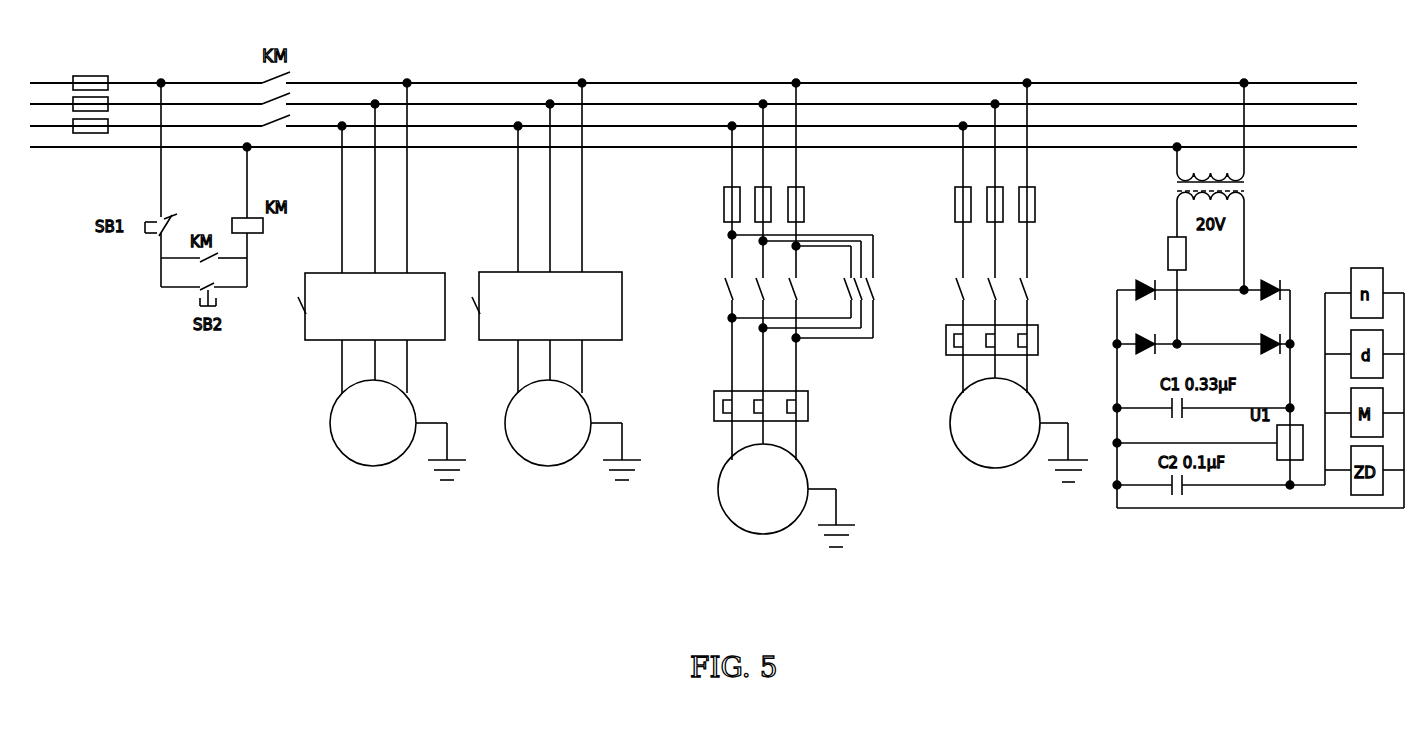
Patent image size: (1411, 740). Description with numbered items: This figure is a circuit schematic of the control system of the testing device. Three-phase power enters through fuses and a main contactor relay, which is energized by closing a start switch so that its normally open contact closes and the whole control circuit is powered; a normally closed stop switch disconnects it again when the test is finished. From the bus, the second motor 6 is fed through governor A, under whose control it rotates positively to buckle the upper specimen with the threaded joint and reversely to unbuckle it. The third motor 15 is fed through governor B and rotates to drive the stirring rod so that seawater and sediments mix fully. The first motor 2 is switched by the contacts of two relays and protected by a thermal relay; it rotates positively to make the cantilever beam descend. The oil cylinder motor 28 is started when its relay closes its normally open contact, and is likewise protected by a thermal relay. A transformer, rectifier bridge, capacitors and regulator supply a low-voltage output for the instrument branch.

The second motor 6 is at (365, 452).
The third motor 15 is at (543, 455).
The first motor 2 is at (731, 486).
The oil cylinder motor 28 is at (1000, 458).